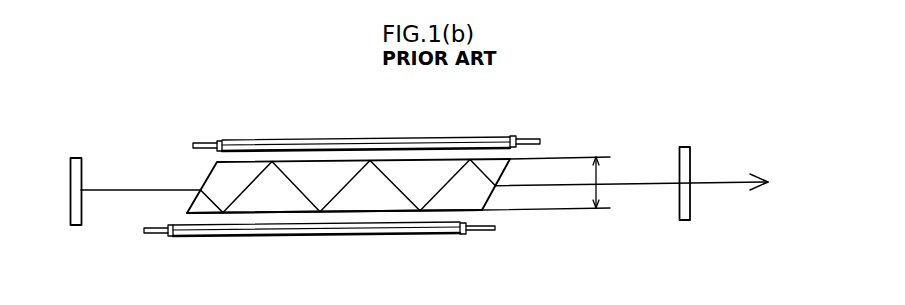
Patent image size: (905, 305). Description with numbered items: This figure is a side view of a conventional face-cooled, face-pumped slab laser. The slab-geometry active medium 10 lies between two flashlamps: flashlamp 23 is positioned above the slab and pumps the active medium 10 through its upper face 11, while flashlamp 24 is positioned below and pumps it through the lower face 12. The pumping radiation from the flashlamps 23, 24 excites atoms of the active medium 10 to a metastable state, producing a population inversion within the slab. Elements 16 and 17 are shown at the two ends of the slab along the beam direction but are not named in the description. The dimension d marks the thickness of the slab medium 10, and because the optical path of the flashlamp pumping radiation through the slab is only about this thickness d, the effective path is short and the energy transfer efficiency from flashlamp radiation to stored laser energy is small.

The active medium 10 is at (168, 182).
The face 11 is at (415, 159).
The face 12 is at (396, 212).
The rear mirror 16 is at (75, 167).
The output mirror 17 is at (686, 158).
The flashlamp 23 is at (310, 138).
The flashlamp 24 is at (287, 237).
The thickness d is at (597, 175).